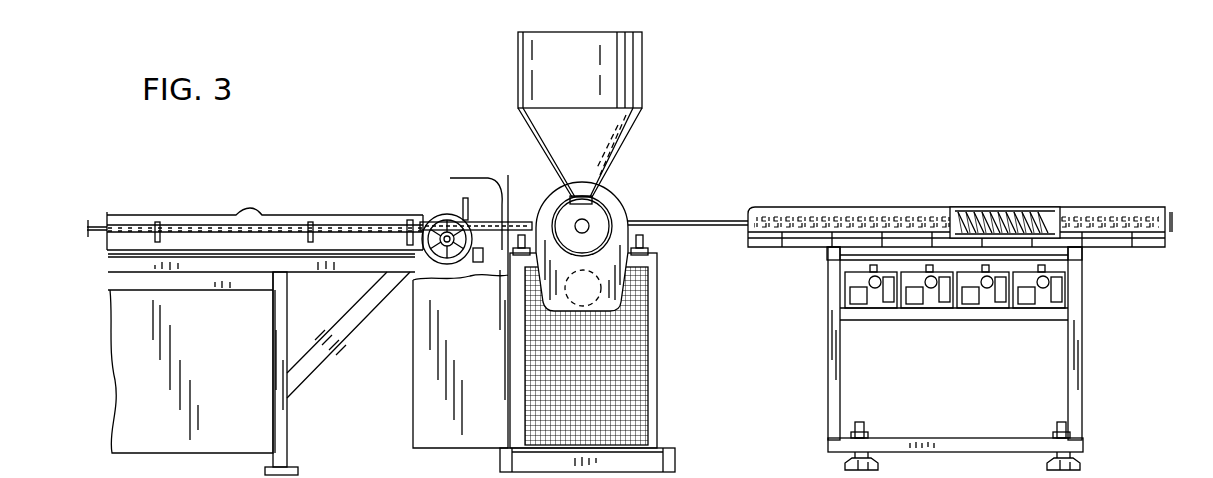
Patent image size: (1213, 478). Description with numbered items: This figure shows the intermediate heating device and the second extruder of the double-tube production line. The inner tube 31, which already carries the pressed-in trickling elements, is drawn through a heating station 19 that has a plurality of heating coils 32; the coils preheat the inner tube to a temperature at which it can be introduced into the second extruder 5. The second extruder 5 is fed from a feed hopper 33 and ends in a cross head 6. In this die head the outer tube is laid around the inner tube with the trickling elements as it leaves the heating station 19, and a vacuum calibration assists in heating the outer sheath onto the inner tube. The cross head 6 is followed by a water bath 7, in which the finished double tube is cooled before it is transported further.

The second extruder 5 is at (600, 224).
The cross head 6 is at (526, 222).
The water bath 7 is at (240, 240).
The heating station 19 is at (981, 158).
The tube 31 is at (708, 222).
The heating coils 32 is at (815, 207).
The feed hopper 33 is at (532, 78).